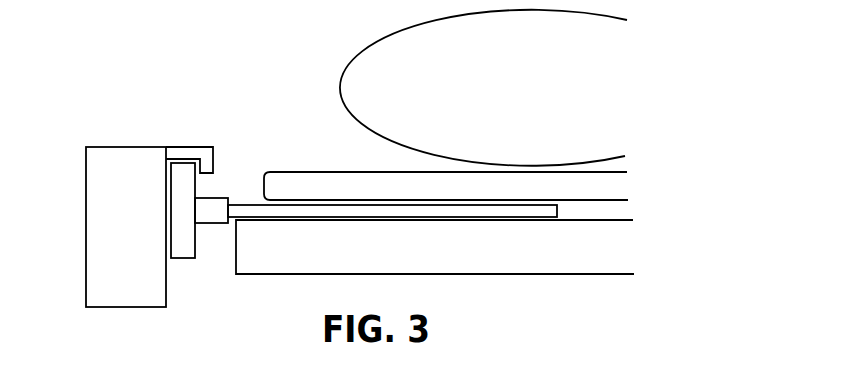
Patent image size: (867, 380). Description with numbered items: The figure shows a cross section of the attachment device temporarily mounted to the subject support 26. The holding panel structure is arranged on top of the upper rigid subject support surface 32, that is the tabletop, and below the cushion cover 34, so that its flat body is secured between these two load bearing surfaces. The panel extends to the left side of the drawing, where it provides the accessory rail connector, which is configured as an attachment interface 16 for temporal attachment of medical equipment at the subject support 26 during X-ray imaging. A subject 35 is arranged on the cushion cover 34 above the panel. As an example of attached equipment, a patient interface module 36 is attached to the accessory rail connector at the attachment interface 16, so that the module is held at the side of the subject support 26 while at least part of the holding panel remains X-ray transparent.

The attachment interface 16 is at (195, 188).
The subject support 26 is at (580, 305).
The upper rigid subject support surface 32 is at (600, 223).
The cushion cover 34 is at (617, 190).
The subject 35 is at (598, 87).
The patient interface module 36 is at (97, 190).